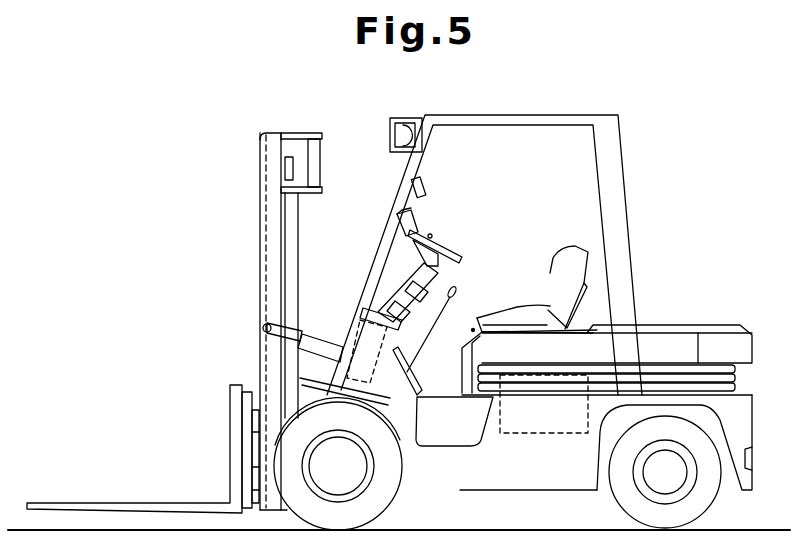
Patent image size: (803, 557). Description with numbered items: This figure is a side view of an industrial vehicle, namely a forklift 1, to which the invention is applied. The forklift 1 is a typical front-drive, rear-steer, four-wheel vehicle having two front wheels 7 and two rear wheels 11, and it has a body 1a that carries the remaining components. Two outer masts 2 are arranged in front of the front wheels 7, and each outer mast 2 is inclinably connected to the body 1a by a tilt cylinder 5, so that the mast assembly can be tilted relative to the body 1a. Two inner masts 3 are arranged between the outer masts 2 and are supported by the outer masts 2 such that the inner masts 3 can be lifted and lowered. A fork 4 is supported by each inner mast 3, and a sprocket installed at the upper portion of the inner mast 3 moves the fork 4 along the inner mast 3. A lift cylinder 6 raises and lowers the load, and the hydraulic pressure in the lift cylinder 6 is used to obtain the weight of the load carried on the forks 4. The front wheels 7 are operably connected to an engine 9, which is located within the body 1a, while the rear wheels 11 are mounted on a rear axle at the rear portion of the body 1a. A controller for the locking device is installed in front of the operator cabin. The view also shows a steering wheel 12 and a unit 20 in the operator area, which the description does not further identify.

The forklift 1 is at (682, 138).
The body 1a is at (522, 490).
The outer mast 2 is at (259, 166).
The inner mast 3 is at (258, 133).
The fork 4 is at (100, 503).
The tilt cylinder 5 is at (333, 345).
The lift cylinder 6 is at (298, 212).
The front wheel 7 is at (383, 508).
The engine 9 is at (570, 433).
The rear wheel 11 is at (705, 508).
The steering wheel 12 is at (457, 260).
The steering unit 20 is at (372, 318).